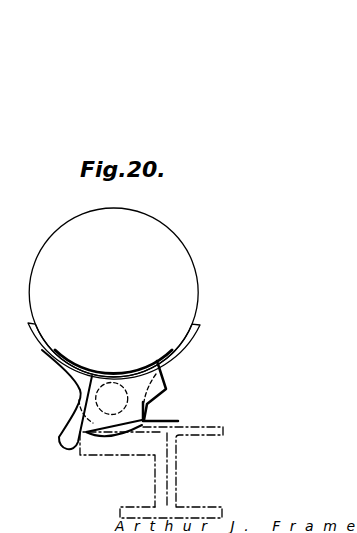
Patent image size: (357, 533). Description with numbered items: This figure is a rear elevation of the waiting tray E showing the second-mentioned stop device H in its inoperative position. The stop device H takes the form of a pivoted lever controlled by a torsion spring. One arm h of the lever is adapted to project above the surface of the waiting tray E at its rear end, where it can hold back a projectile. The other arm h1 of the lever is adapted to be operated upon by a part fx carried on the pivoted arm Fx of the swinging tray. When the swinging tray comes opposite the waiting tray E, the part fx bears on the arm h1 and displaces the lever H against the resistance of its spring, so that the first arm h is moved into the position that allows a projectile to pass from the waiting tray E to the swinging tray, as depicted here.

The waiting tray E is at (53, 357).
The arm of stop lever h is at (159, 384).
The stop device H is at (125, 399).
The arm of stop lever h1 is at (57, 437).
The part on pivoted arm fx is at (110, 455).
The pivoted arm Fx is at (176, 460).